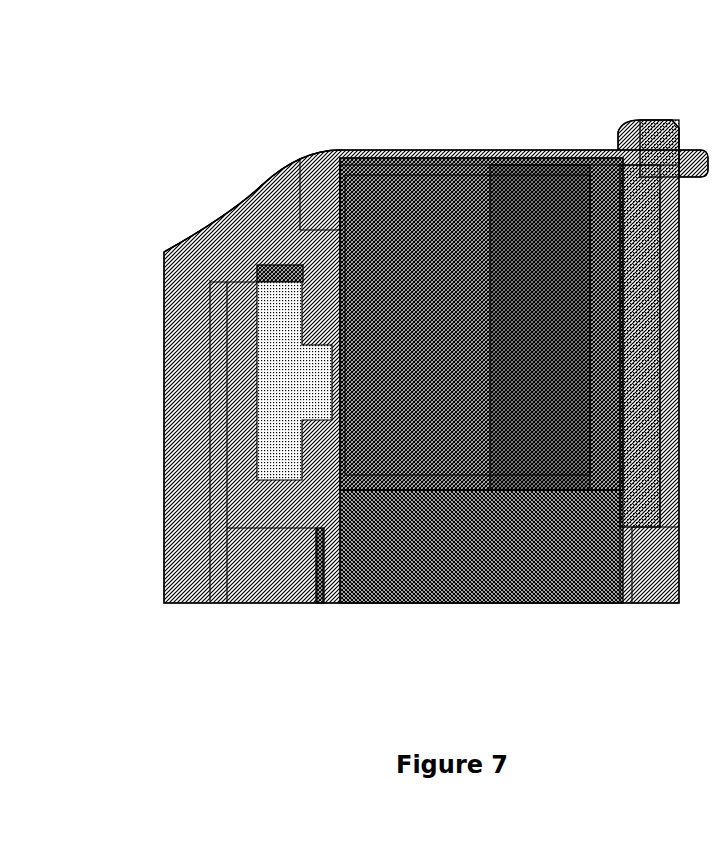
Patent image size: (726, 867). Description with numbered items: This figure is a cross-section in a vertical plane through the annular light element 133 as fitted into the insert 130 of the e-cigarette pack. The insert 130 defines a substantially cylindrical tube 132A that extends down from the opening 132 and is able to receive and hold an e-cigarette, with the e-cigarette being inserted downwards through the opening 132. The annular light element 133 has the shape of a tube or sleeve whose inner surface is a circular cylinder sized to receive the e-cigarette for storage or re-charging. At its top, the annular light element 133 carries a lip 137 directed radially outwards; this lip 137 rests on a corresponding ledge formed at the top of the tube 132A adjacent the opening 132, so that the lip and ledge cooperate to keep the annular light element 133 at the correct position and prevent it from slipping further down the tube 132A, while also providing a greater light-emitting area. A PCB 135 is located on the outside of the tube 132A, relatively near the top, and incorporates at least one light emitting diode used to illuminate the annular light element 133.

The insert 130 is at (190, 378).
The opening 132 is at (490, 183).
The substantially cylindrical tube 132A is at (475, 570).
The annular light element 133 is at (365, 138).
The PCB 135 is at (285, 385).
The lip 137 is at (323, 183).